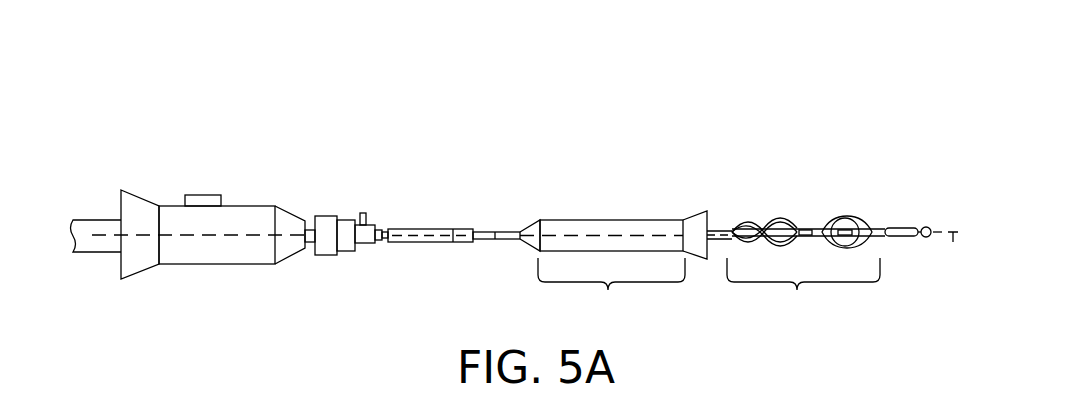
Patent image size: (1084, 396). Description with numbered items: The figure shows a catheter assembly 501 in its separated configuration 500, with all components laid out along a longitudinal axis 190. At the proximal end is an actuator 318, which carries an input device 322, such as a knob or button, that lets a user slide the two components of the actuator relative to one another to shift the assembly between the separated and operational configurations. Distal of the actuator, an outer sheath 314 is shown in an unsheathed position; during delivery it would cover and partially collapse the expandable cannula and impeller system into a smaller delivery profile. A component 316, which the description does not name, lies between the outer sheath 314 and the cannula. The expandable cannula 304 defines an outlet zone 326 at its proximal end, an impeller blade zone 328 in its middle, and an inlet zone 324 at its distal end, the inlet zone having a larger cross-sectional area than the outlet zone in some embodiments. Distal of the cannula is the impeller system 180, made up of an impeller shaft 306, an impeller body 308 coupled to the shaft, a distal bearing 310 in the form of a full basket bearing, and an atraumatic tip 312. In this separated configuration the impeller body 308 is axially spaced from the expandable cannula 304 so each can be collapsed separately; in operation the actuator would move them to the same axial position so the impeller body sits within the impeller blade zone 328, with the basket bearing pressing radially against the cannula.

The actuator 318 is at (242, 172).
The input device 322 is at (202, 194).
The catheter assembly 501 is at (364, 138).
The outer sheath 314 is at (407, 228).
The intermediate shaft 316 is at (508, 231).
The outlet zone 326 is at (528, 228).
The expandable cannula 304 is at (560, 219).
The inlet zone 324 is at (692, 208).
The impeller shaft 306 is at (717, 229).
The impeller body 308 is at (763, 213).
The distal bearing 310 is at (828, 217).
The atraumatic tip 312 is at (910, 230).
The separated configuration 500 is at (842, 146).
The longitudinal axis 190 is at (948, 245).
The impeller blade zone 328 is at (611, 292).
The impeller system 180 is at (803, 292).